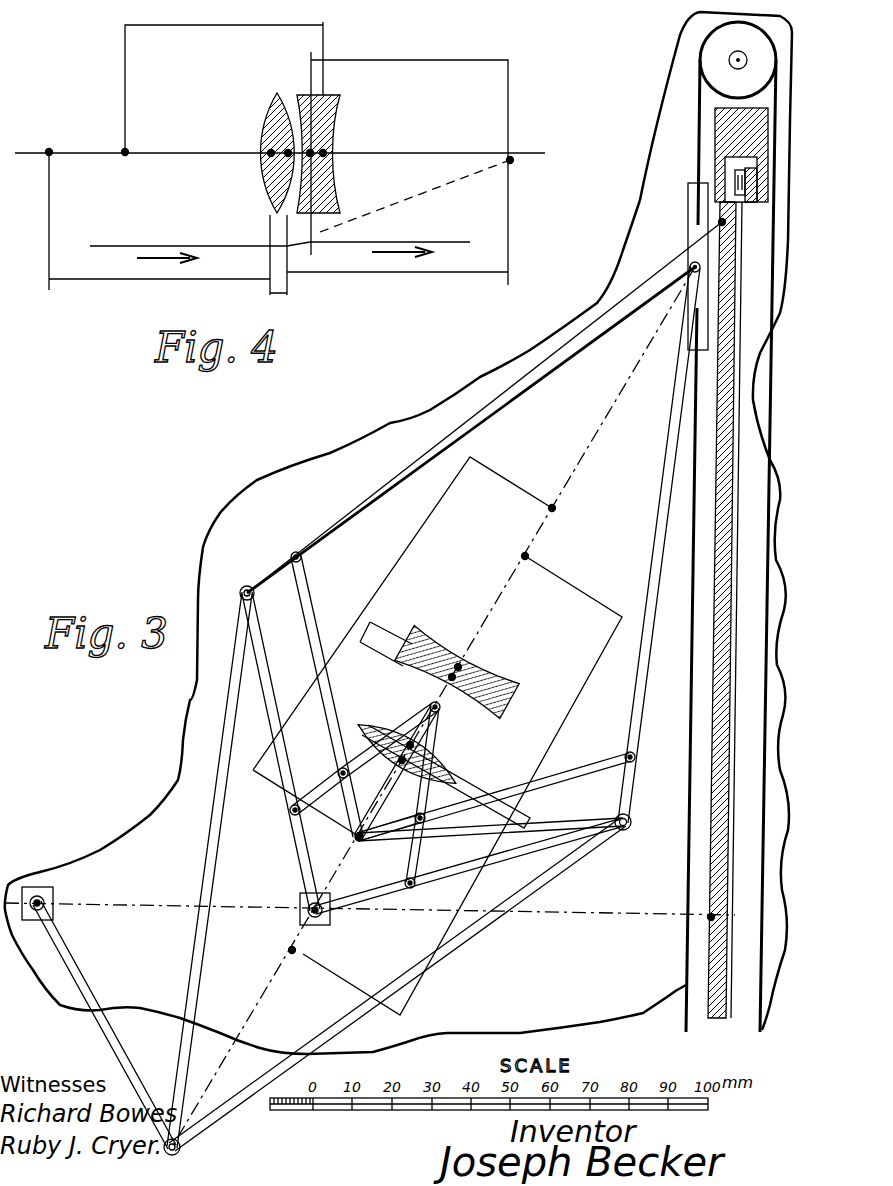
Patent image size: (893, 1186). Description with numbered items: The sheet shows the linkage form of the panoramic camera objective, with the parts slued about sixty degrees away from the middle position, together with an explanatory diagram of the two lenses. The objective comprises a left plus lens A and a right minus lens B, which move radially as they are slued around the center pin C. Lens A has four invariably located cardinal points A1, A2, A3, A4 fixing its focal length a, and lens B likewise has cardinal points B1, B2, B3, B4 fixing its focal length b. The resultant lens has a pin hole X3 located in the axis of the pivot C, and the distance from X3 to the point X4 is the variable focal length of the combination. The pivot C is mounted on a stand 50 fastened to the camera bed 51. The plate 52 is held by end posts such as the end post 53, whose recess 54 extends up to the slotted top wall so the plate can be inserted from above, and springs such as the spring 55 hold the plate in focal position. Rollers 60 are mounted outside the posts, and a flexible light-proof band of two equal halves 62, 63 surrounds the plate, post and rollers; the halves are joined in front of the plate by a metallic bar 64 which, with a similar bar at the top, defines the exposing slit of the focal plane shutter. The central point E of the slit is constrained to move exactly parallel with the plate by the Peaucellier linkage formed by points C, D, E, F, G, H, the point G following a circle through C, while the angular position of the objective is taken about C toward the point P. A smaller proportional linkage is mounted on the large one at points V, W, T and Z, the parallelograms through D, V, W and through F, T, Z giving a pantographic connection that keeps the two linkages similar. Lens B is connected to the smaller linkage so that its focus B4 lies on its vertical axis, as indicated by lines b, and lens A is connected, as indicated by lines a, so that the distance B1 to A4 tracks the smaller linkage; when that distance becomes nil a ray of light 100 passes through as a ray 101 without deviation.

In FIG. 3, the stand 50 is at (322, 928).
In FIG. 3, the camera bed 51 is at (118, 860).
In FIG. 3, the plate 52 is at (712, 880).
In FIG. 3, the end post 53 is at (718, 100).
In FIG. 3, the recess 54 is at (722, 128).
In FIG. 3, the spring 55 is at (746, 203).
In FIG. 3, the roller 60 is at (718, 48).
In FIG. 3, the band half 62 is at (700, 135).
In FIG. 3, the band half 63 is at (690, 693).
In FIG. 3, the metallic bar 64 is at (688, 205).
In FIG. 4, the ray of light 100 is at (178, 246).
In FIG. 4, the ray 101 is at (416, 242).
In FIG. 4, the left component lens A is at (275, 100).
In FIG. 3, the left component lens A is at (365, 728).
In FIG. 4, the right component lens B is at (333, 102).
In FIG. 3, the right component lens B is at (505, 690).
In FIG. 4, the connection lines a is at (80, 280).
In FIG. 3, the connection lines a is at (572, 715).
In FIG. 4, the connection lines b is at (158, 38).
In FIG. 3, the connection lines b is at (418, 550).
In FIG. 4, the cardinal point of lens A A1 is at (47, 156).
In FIG. 3, the cardinal point of lens A A1 is at (276, 949).
In FIG. 4, the cardinal point of lens A A2 is at (269, 157).
In FIG. 3, the cardinal point of lens A A2 is at (402, 765).
In FIG. 4, the cardinal point of lens A A3 is at (285, 148).
In FIG. 3, the cardinal point of lens A A3 is at (408, 740).
In FIG. 4, the cardinal point of lens A A4 is at (508, 156).
In FIG. 3, the cardinal point of lens A A4 is at (523, 554).
In FIG. 4, the cardinal point of lens B B1 is at (512, 158).
In FIG. 3, the cardinal point of lens B B1 is at (556, 508).
In FIG. 4, the cardinal point of lens B B2 is at (326, 157).
In FIG. 3, the cardinal point of lens B B2 is at (453, 682).
In FIG. 4, the cardinal point of lens B B3 is at (313, 150).
In FIG. 3, the cardinal point of lens B B3 is at (459, 664).
In FIG. 4, the cardinal point of lens B B4 is at (127, 150).
In FIG. 3, the cardinal point of lens B B4 is at (491, 797).
In FIG. 3, the center pin C is at (325, 918).
In FIG. 3, the linkage point D is at (455, 589).
In FIG. 3, the central point of exposing slit E is at (690, 268).
In FIG. 3, the linkage point F is at (657, 560).
In FIG. 3, the linkage point G is at (395, 884).
In FIG. 3, the linkage point H is at (99, 1011).
In FIG. 3, the angular position point P is at (708, 920).
In FIG. 3, the mounting point T is at (625, 756).
In FIG. 3, the mounting point V is at (316, 682).
In FIG. 3, the mounting point W is at (288, 812).
In FIG. 3, the mounting point Z is at (416, 887).
In FIG. 3, the pin hole of resultant lens X3 is at (308, 907).
In FIG. 3, the cardinal point of resultant lens X4 is at (720, 224).